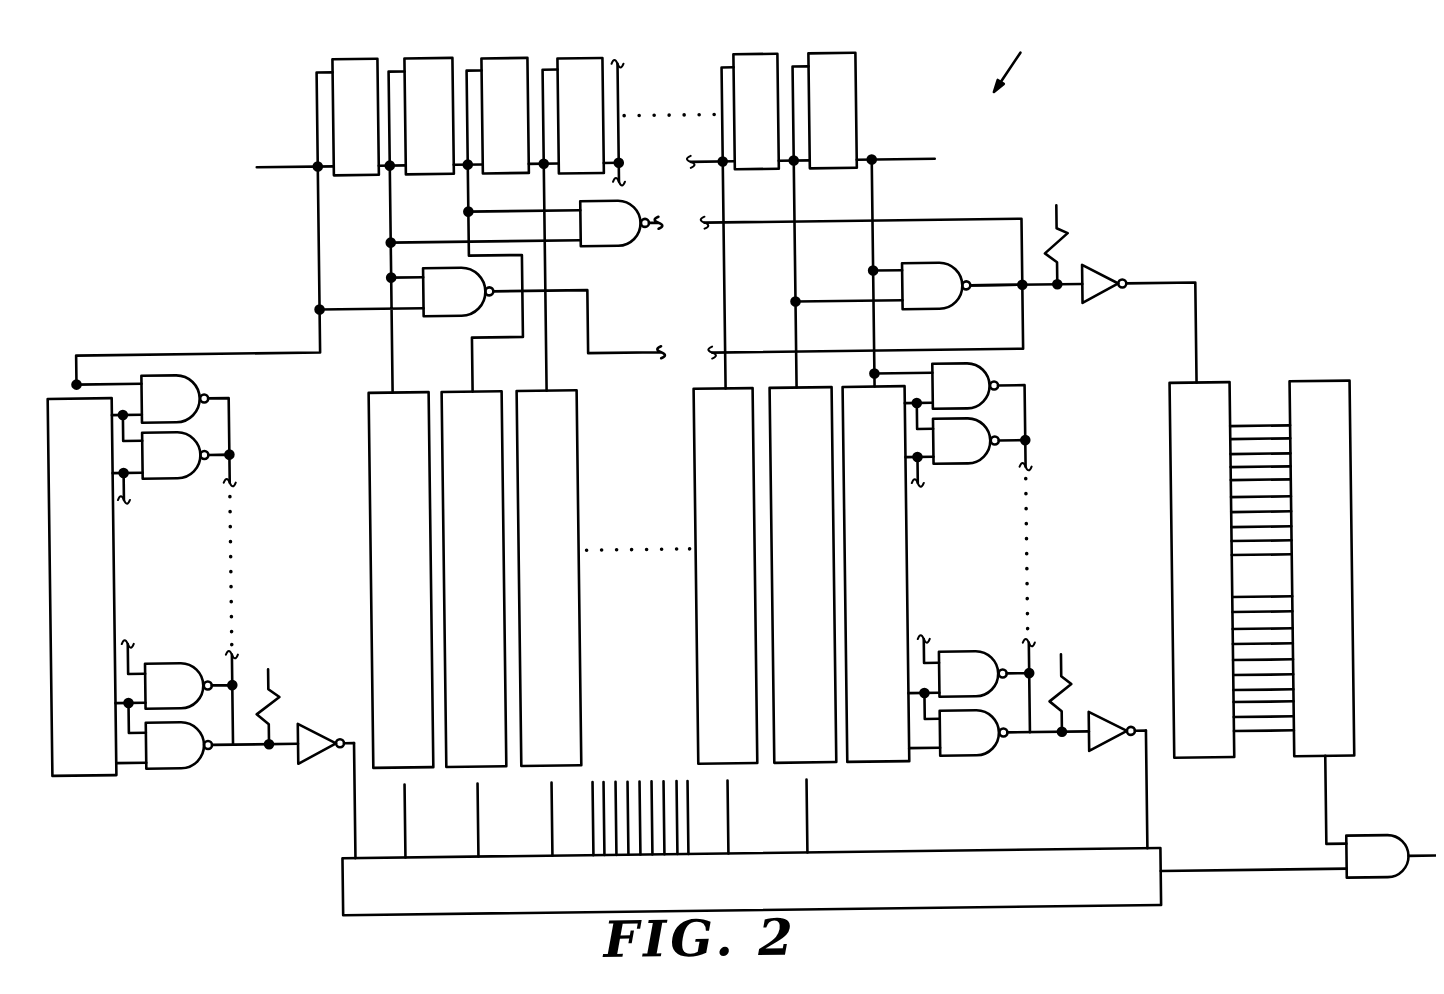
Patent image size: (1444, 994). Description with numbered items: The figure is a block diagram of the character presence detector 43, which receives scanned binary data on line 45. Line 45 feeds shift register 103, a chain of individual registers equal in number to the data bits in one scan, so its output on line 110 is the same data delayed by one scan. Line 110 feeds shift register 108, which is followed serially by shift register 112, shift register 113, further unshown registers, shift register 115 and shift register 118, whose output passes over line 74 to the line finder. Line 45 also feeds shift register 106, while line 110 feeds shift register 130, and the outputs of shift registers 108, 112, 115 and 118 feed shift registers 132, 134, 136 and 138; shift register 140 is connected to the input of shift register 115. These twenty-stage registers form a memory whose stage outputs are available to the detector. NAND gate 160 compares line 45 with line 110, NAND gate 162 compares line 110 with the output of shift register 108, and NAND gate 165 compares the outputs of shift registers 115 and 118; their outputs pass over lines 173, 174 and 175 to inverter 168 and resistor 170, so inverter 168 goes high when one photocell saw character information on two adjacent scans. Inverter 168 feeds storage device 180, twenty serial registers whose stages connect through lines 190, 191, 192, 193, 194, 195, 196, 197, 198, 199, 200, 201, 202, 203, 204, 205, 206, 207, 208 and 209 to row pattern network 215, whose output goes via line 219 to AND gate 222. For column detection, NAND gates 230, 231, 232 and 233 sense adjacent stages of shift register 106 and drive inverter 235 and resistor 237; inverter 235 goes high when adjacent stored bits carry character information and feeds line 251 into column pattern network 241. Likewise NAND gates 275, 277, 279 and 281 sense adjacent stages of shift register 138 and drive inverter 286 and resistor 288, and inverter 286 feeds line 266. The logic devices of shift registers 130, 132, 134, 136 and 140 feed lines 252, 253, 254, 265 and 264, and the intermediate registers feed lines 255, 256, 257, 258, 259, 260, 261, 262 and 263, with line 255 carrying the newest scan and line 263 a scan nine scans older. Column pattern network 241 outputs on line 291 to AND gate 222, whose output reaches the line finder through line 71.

The character presence detector 43 is at (1013, 62).
The line 45 is at (292, 160).
The line 71 is at (1408, 858).
The line 74 is at (910, 158).
The shift register 103 is at (344, 55).
The shift register 106 is at (73, 558).
The shift register 108 is at (422, 52).
The line 110 is at (389, 168).
The shift register 112 is at (499, 53).
The shift register 113 is at (576, 54).
The shift register 115 is at (752, 52).
The shift register 118 is at (827, 53).
The shift register 130 is at (395, 562).
The shift register 132 is at (468, 560).
The shift register 134 is at (544, 559).
The shift register 136 is at (797, 554).
The shift register 138 is at (870, 553).
The shift register 140 is at (718, 556).
The NAND gate 160 is at (443, 297).
The NAND gate 162 is at (600, 230).
The NAND gate 165 is at (922, 297).
The inverter 168 is at (1110, 282).
The resistor 170 is at (1071, 236).
The line 173 is at (599, 351).
The line 174 is at (657, 226).
The line 175 is at (989, 293).
The storage device 180 is at (1218, 387).
The line 190 is at (1274, 432).
The line 191 is at (1246, 445).
The line 192 is at (1274, 460).
The line 193 is at (1246, 473).
The line 194 is at (1274, 486).
The line 195 is at (1246, 503).
The line 196 is at (1273, 518).
The line 197 is at (1245, 533).
The line 198 is at (1273, 547).
The line 199 is at (1245, 561).
The line 200 is at (1248, 603).
The line 201 is at (1276, 618).
The line 202 is at (1247, 635).
The line 203 is at (1276, 650).
The line 204 is at (1247, 666).
The line 205 is at (1276, 681).
The line 206 is at (1246, 696).
The line 207 is at (1276, 708).
The line 208 is at (1246, 723).
The line 209 is at (1276, 737).
The row pattern network 215 is at (1314, 385).
The line 219 is at (1324, 814).
The AND gate 222 is at (1346, 887).
The NAND gate 230 is at (158, 401).
The NAND gate 231 is at (158, 458).
The NAND gate 232 is at (158, 688).
The NAND gate 233 is at (158, 748).
The inverter 235 is at (321, 730).
The resistor 237 is at (272, 692).
The column pattern network 241 is at (1016, 910).
The line 251 is at (350, 799).
The line 252 is at (396, 797).
The line 253 is at (469, 798).
The line 254 is at (544, 799).
The line 255 is at (586, 799).
The line 256 is at (601, 792).
The line 257 is at (616, 836).
The line 258 is at (622, 843).
The line 259 is at (634, 782).
The line 260 is at (647, 796).
The line 261 is at (651, 850).
The line 262 is at (671, 848).
The line 263 is at (686, 838).
The line 264 is at (727, 820).
The line 265 is at (800, 806).
The line 266 is at (1134, 804).
The NAND gate 275 is at (949, 397).
The NAND gate 277 is at (949, 452).
The NAND gate 279 is at (952, 685).
The NAND gate 281 is at (952, 744).
The inverter 286 is at (1112, 725).
The resistor 288 is at (1071, 688).
The bus line 291 is at (1192, 878).